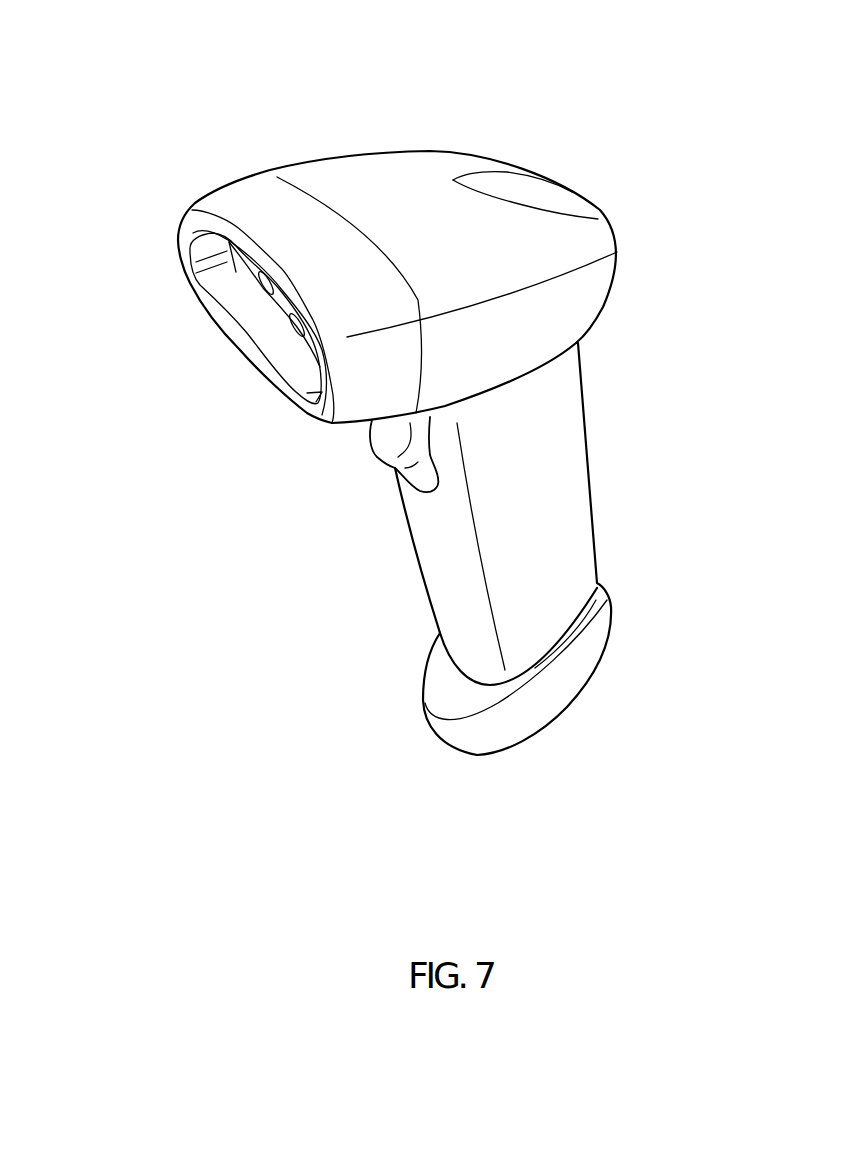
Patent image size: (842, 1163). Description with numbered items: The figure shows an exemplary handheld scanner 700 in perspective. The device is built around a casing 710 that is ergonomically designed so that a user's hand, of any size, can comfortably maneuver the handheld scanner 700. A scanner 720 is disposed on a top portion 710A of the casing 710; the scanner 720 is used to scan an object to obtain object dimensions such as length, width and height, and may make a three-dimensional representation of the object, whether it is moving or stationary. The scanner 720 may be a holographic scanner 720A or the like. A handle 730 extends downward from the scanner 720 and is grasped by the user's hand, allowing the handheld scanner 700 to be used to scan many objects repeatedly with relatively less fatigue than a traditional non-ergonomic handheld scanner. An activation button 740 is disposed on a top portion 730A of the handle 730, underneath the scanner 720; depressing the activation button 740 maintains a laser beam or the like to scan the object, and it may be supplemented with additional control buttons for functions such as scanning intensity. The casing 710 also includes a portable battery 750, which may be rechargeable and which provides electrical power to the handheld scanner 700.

The handheld scanner 700 is at (147, 73).
The casing 710 is at (536, 134).
The top portion of the casing 710A is at (577, 193).
The scanner 720 is at (230, 290).
The holographic scanner 720A is at (280, 317).
The handle 730 is at (609, 447).
The top portion of the handle 730A is at (425, 543).
The activation button 740 is at (392, 440).
The portable battery 750 is at (448, 697).